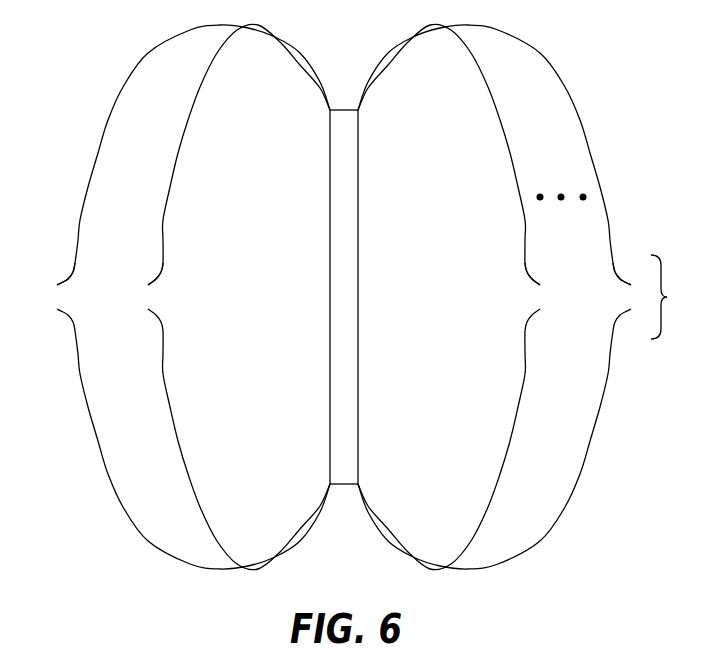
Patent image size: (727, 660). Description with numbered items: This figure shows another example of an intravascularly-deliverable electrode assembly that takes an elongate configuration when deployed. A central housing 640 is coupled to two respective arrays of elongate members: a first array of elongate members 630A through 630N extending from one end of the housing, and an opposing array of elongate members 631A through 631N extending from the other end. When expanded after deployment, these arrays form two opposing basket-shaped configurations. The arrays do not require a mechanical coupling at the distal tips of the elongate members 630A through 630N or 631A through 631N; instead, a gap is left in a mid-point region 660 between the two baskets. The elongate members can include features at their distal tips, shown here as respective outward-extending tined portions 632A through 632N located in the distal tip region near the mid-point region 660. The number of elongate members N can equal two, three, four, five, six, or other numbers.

The elongate member 630A is at (181, 296).
The elongate member 631A is at (107, 468).
The outward-extending tined portion 632A is at (68, 276).
The elongate member 630N is at (507, 296).
The elongate member 631N is at (582, 468).
The outward-extending tined portion 632N is at (619, 276).
The housing 640 is at (330, 294).
The mid-point region 660 is at (622, 267).